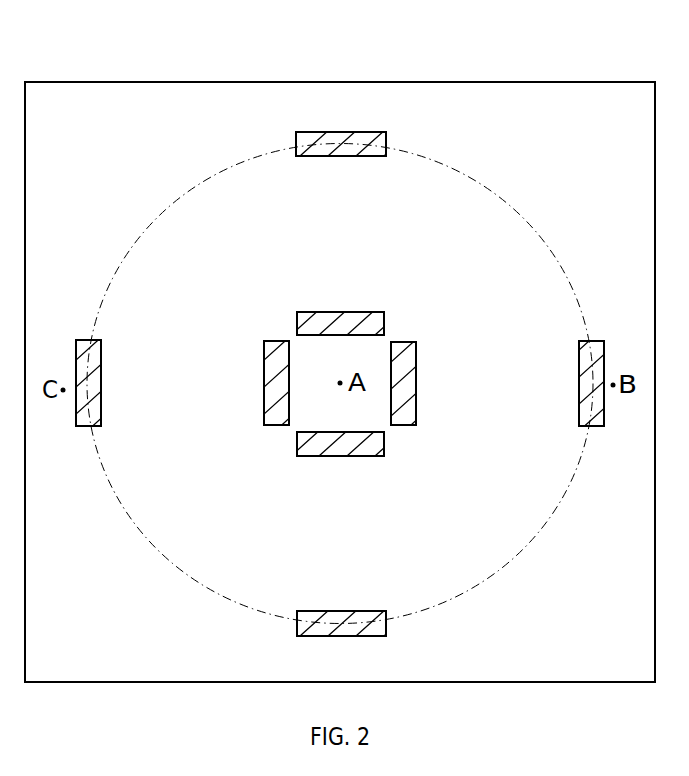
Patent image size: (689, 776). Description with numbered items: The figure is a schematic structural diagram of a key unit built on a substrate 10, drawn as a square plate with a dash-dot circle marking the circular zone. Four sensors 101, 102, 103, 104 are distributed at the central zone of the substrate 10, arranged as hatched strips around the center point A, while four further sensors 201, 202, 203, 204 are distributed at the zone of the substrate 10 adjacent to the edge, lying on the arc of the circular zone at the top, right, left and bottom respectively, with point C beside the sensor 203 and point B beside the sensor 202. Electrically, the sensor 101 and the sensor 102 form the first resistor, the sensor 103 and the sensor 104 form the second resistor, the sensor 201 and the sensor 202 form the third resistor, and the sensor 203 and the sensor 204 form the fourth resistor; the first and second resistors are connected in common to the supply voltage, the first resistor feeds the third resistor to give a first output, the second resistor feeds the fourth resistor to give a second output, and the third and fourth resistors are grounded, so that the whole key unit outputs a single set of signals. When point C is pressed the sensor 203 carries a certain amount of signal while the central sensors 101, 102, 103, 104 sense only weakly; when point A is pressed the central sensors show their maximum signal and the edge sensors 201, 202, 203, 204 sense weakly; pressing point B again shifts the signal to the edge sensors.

The substrate 10 is at (326, 82).
The sensor 101 is at (335, 312).
The sensor 102 is at (416, 385).
The sensor 103 is at (264, 366).
The sensor 104 is at (335, 456).
The sensor 201 is at (340, 132).
The sensor 202 is at (583, 341).
The sensor 203 is at (88, 340).
The sensor 204 is at (333, 611).